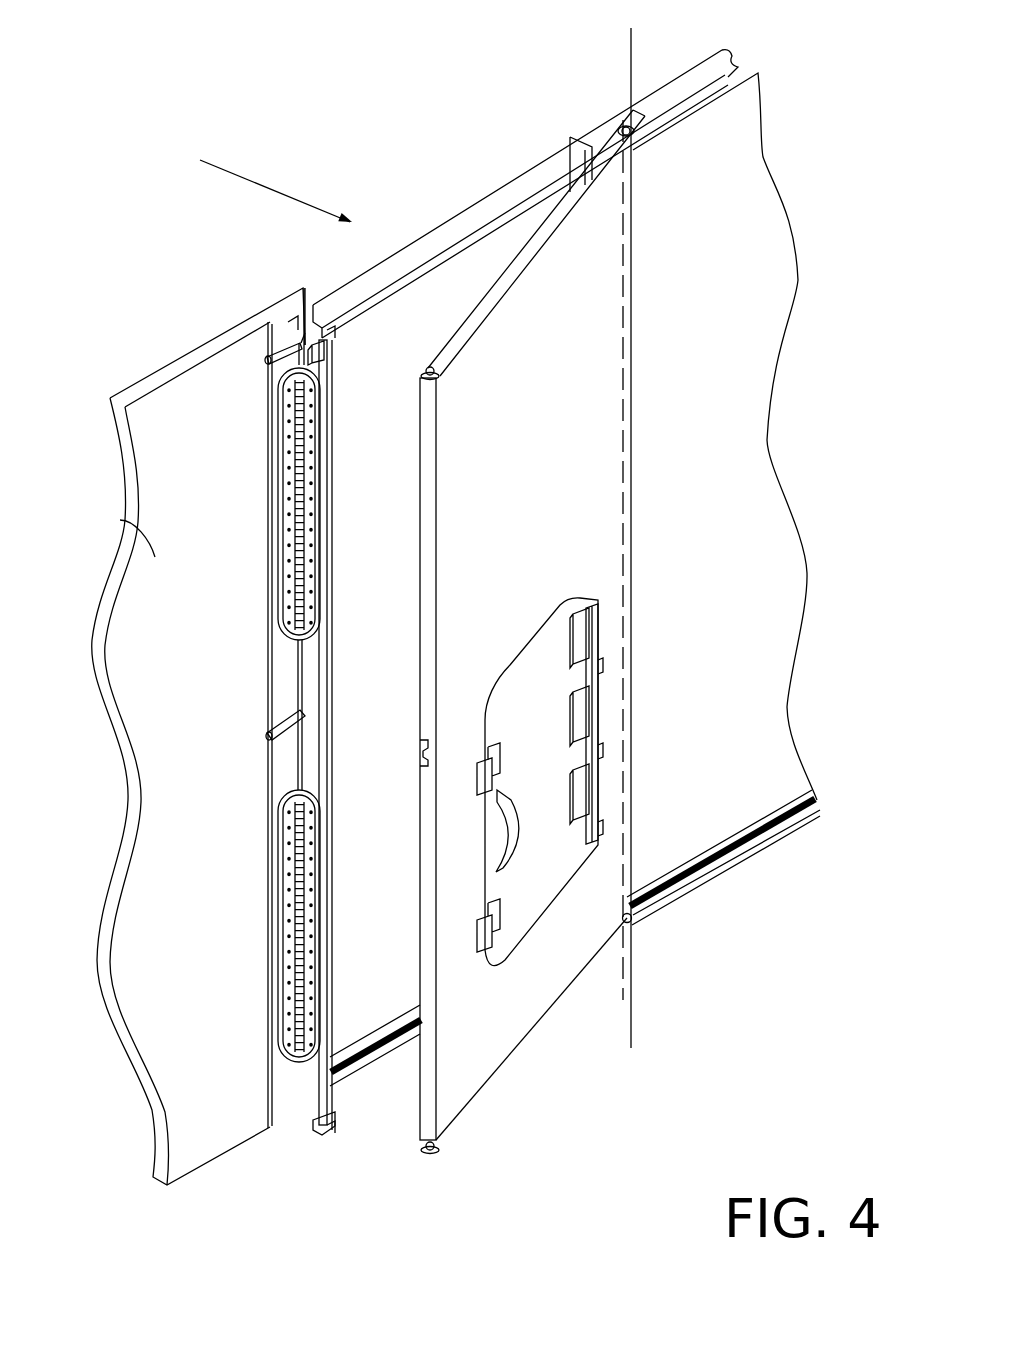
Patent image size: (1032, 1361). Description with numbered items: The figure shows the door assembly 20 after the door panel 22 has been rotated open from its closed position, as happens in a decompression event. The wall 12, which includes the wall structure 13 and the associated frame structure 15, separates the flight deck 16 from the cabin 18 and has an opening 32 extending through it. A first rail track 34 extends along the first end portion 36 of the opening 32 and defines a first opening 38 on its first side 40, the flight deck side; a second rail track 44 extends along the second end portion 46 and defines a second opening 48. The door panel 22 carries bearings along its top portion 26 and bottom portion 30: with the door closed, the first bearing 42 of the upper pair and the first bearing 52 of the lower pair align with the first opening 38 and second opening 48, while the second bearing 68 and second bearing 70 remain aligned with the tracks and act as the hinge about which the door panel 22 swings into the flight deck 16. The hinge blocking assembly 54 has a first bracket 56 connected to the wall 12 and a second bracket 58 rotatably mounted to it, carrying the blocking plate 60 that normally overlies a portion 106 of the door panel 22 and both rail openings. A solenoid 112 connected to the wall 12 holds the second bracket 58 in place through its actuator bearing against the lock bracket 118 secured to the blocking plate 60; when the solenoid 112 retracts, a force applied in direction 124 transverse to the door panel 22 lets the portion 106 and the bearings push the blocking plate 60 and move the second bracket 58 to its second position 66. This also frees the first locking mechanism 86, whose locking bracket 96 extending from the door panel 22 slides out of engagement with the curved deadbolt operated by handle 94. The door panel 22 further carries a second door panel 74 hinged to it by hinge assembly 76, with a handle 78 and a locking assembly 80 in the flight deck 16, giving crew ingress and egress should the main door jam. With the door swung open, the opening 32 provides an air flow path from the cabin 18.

The wall 12 is at (454, 629).
The wall structure 13 is at (155, 557).
The frame structure 15 is at (287, 300).
The flight deck 16 is at (755, 1042).
The cabin 18 is at (145, 311).
The door assembly 20 is at (303, 74).
The door panel 22 is at (577, 487).
The top portion 26 is at (536, 243).
The bottom portion 30 is at (531, 1029).
The opening 32 is at (376, 798).
The first rail track 34 is at (725, 60).
The first end portion 36 is at (522, 197).
The first opening 38 is at (356, 278).
The first side 40 is at (332, 345).
The first bearing 42 is at (440, 363).
The second rail track 44 is at (745, 858).
The second end portion 46 is at (375, 1032).
The second opening 48 is at (310, 1122).
The first bearing 52 is at (428, 1155).
The hinge blocking assembly 54 is at (216, 725).
The first bracket 56 is at (280, 582).
The second bracket 58 is at (313, 458).
The blocking plate 60 is at (323, 383).
The second position 66 is at (376, 713).
The second bearing 68 is at (628, 124).
The second bearing 70 is at (630, 922).
The second door panel 74 is at (553, 787).
The hinge assembly 76 is at (592, 637).
The handle 78 is at (514, 824).
The locking assembly 80 is at (483, 798).
The first locking mechanism 86 is at (326, 585).
The handle 94 is at (273, 717).
The locking bracket 96 is at (425, 750).
The portion of door panel 106 is at (482, 759).
The solenoid 112 is at (266, 360).
The lock bracket 118 is at (244, 306).
The direction 124 is at (245, 180).